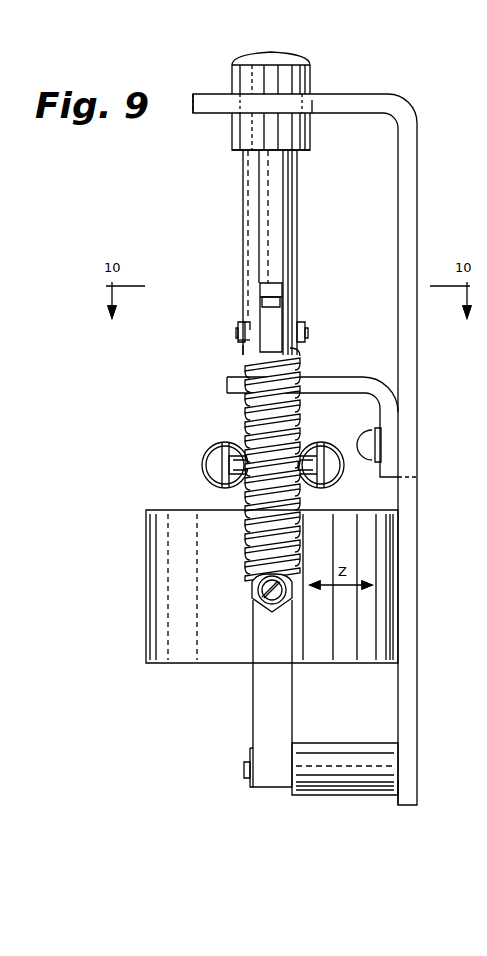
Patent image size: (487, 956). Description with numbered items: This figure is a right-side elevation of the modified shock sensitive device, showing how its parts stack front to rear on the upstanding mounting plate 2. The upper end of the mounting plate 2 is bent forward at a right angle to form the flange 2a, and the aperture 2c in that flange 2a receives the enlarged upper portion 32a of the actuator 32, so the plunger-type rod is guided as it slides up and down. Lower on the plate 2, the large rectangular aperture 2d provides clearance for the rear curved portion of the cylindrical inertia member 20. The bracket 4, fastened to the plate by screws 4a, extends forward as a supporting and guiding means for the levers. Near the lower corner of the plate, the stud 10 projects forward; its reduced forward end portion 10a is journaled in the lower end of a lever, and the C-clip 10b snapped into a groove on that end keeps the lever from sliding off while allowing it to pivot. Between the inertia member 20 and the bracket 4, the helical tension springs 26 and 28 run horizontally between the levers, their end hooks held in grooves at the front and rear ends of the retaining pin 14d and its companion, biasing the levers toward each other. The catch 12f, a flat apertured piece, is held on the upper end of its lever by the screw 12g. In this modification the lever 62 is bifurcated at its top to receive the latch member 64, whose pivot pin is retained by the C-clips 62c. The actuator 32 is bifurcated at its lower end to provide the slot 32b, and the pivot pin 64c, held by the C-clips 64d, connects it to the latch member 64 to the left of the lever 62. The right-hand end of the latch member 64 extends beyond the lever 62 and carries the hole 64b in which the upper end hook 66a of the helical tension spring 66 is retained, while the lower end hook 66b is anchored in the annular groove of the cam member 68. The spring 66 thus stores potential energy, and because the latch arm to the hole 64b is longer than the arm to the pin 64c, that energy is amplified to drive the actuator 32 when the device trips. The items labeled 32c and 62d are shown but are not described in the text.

The mounting plate 2 is at (412, 170).
The flange 2a is at (210, 100).
The aperture 2c is at (316, 114).
The aperture 2d is at (404, 696).
The bracket 4 is at (229, 385).
The screws 4a is at (374, 432).
The stud 10 is at (336, 748).
The reduced forward end portion 10a is at (244, 768).
The C-clip 10b is at (250, 748).
The catch 12f is at (280, 303).
The screw 12g is at (270, 295).
The retaining pin 14d is at (214, 468).
The inertia member 20 is at (160, 547).
The helical tension spring 26 is at (206, 452).
The helical tension spring 28 is at (330, 447).
The actuator 32 is at (310, 60).
The enlarged upper portion 32a is at (314, 86).
The slot 32b is at (268, 290).
The knob cap shoulder 32c is at (236, 150).
The lever 62 is at (265, 690).
The C-clips 62c is at (246, 350).
The plunger collar 62d is at (240, 342).
The latch member 64 is at (294, 318).
The hole 64b is at (306, 334).
The pivot pin 64c is at (238, 332).
The C-clips 64d is at (241, 325).
The helical tension spring 66 is at (303, 422).
The upper end hook 66a is at (300, 352).
The lower end hook 66b is at (256, 585).
The cam member 68 is at (257, 598).